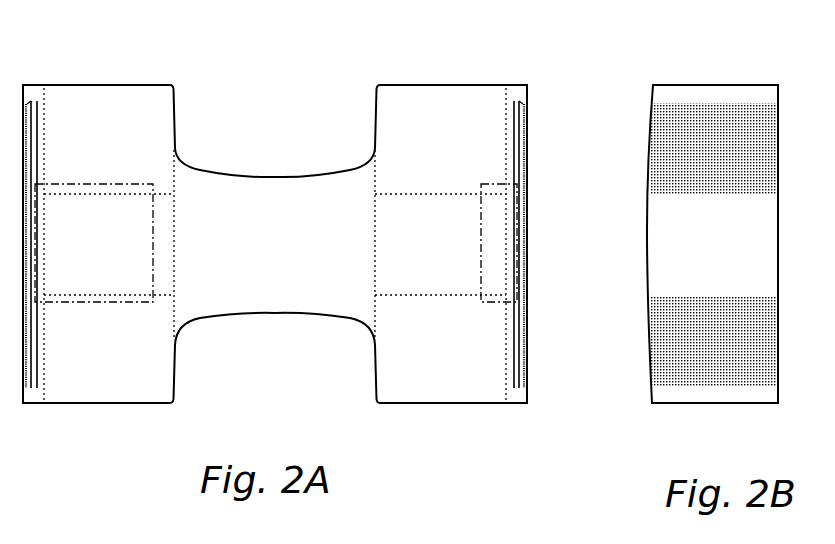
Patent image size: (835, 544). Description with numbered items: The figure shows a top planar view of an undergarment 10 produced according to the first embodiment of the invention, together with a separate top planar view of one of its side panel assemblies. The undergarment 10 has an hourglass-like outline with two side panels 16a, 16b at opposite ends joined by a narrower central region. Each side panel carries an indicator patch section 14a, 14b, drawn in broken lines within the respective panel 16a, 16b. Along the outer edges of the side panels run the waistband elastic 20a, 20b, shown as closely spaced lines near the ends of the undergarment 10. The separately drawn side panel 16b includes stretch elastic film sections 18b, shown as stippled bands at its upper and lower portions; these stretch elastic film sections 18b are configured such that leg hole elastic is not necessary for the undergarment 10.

In FIG. 2A, the undergarment 10 is at (280, 96).
In FIG. 2A, the indicator patch section 14a is at (135, 251).
In FIG. 2A, the indicator patch section 14b is at (497, 215).
In FIG. 2A, the side panel 16a is at (98, 112).
In FIG. 2A, the side panel 16b is at (440, 110).
In FIG. 2B, the side panel 16b is at (665, 234).
In FIG. 2B, the stretch elastic film section 18b is at (707, 120).
In FIG. 2A, the waistband elastic 20a is at (26, 86).
In FIG. 2A, the waistband elastic 20b is at (512, 98).